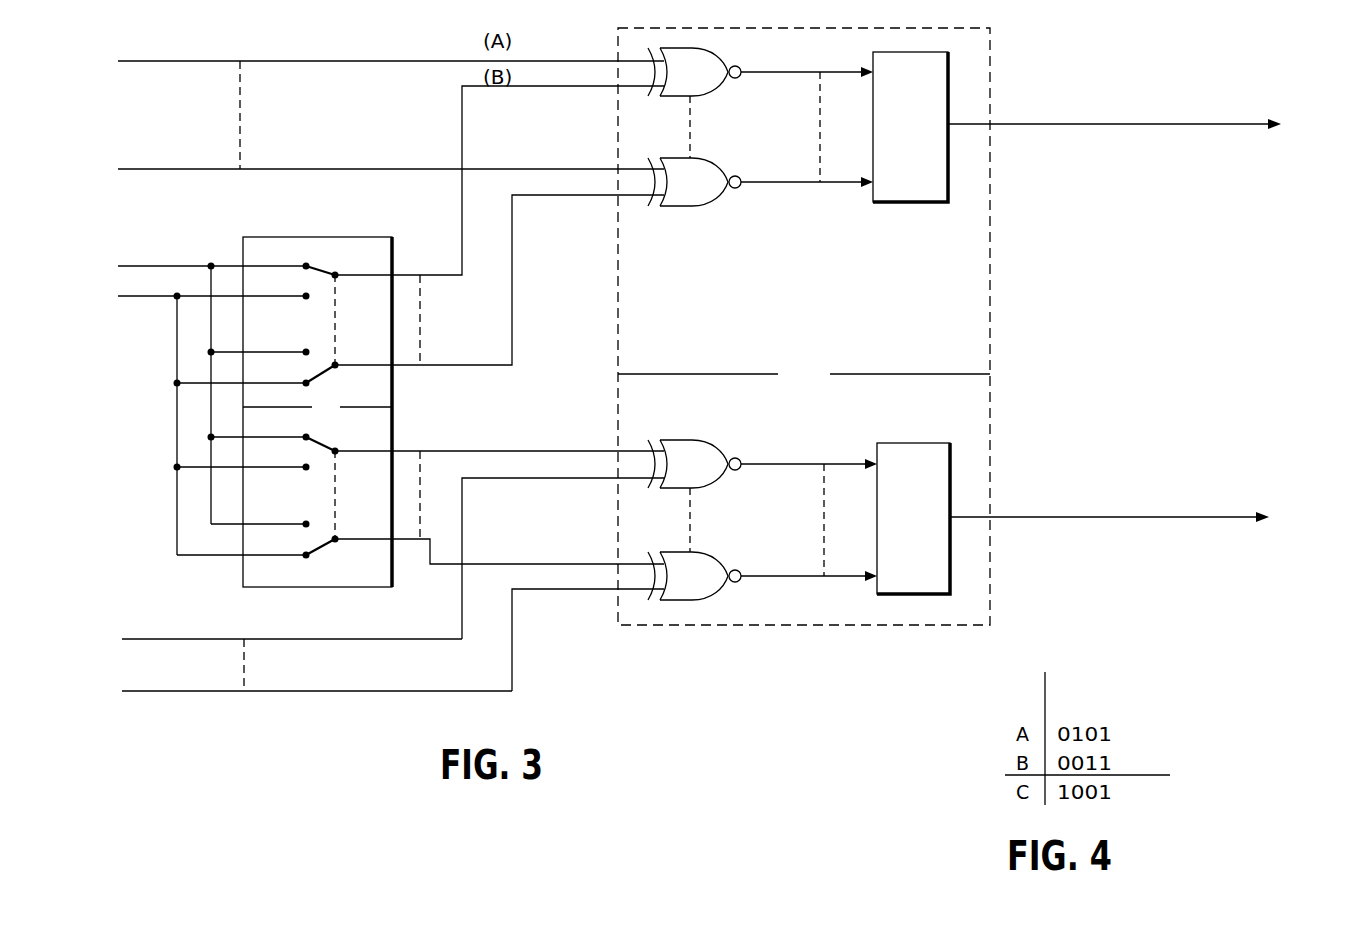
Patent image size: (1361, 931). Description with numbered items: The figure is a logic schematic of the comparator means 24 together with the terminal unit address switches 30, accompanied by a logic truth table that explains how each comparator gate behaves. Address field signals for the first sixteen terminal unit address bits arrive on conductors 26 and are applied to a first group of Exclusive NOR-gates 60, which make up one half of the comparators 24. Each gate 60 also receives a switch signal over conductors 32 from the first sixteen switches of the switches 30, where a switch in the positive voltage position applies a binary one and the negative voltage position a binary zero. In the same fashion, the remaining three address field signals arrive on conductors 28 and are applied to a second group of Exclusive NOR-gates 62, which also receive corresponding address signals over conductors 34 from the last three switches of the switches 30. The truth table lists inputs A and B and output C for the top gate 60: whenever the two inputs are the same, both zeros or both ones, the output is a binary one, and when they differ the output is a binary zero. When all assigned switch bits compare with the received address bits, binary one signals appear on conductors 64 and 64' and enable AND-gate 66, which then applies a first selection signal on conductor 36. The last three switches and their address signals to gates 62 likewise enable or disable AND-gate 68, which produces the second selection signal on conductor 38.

The comparator means 24 is at (992, 277).
The conductors 26 is at (322, 63).
The conductors 28 is at (309, 641).
The TU ADD. switches 30 is at (345, 236).
The conductors 32 is at (458, 278).
The conductors 34 is at (456, 454).
The conductor 36 is at (1088, 126).
The conductor 38 is at (1090, 516).
The Exclusive NOR-gates 60 is at (710, 96).
The Exclusive NOR-gates 62 is at (710, 488).
The conductor 64 is at (807, 113).
The conductor 64' is at (807, 162).
The AND-gate 66 is at (916, 204).
The AND-gate 68 is at (928, 442).